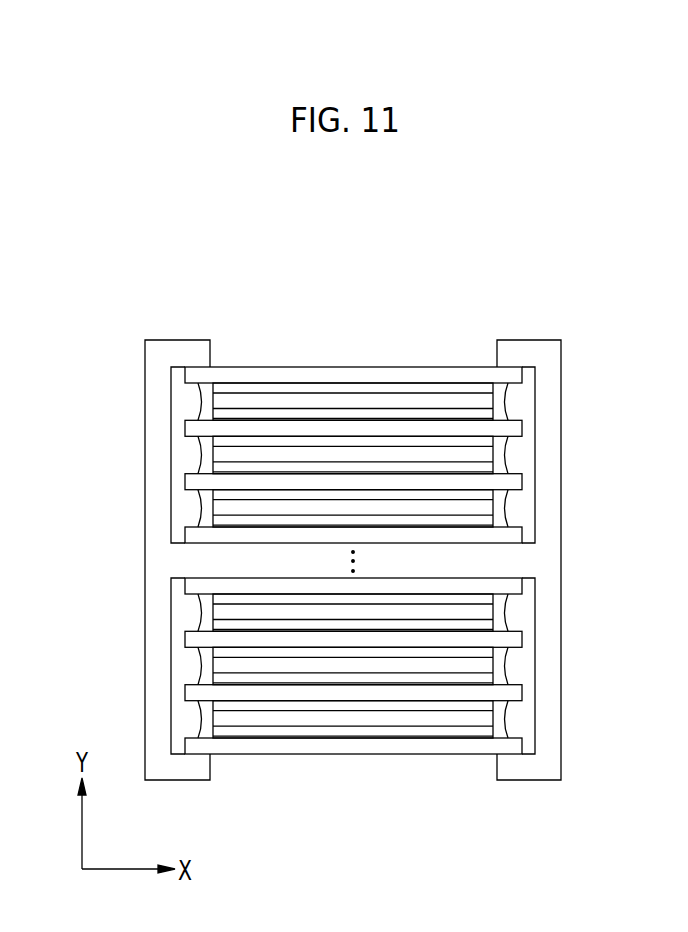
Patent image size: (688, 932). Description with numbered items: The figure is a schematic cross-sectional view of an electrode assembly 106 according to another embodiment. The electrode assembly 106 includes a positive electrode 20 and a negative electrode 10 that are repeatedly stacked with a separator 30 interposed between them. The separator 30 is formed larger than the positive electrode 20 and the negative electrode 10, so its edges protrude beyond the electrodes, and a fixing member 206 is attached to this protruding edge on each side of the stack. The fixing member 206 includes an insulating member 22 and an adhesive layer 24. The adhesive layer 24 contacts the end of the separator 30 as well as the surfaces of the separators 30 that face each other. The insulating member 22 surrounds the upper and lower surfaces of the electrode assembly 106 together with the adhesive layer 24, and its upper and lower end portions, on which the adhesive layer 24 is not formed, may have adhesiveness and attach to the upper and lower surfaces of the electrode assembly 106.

The electrode assembly 106 is at (366, 282).
The fixing member 206 is at (75, 387).
The insulating member 22 is at (158, 437).
The adhesive layer 24 is at (177, 402).
The separator 30 is at (510, 377).
The positive electrode 20 is at (480, 402).
The negative electrode 10 is at (478, 455).